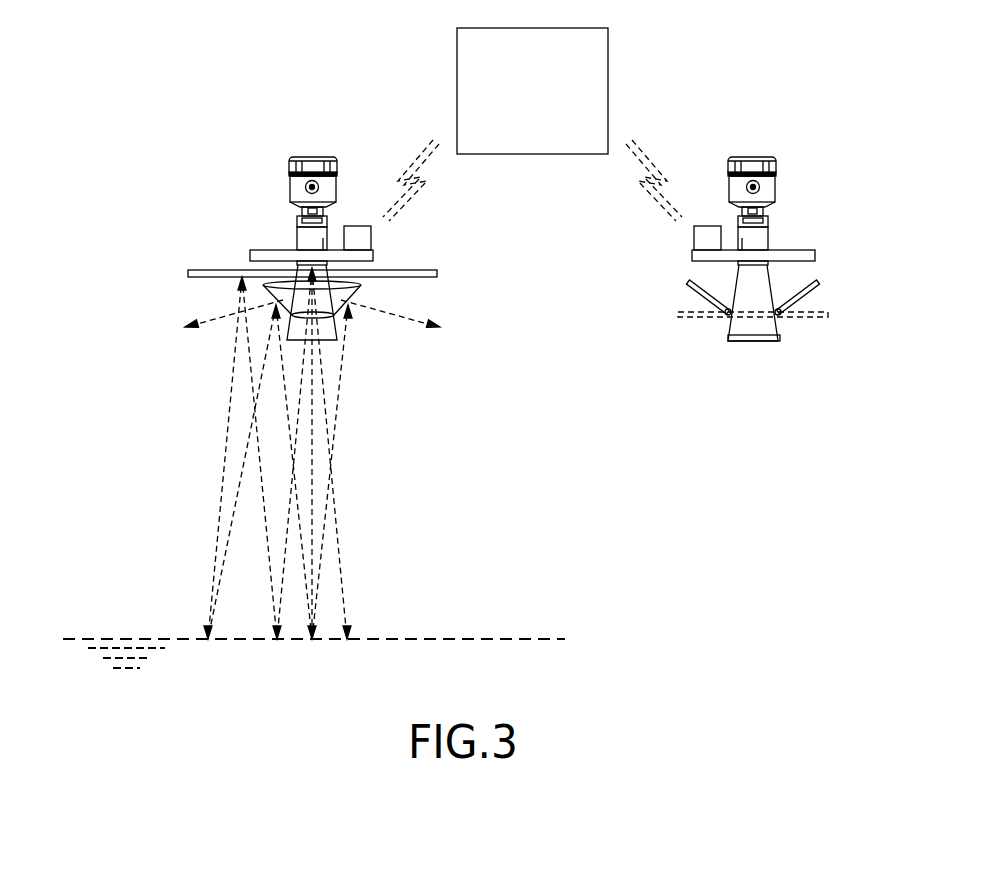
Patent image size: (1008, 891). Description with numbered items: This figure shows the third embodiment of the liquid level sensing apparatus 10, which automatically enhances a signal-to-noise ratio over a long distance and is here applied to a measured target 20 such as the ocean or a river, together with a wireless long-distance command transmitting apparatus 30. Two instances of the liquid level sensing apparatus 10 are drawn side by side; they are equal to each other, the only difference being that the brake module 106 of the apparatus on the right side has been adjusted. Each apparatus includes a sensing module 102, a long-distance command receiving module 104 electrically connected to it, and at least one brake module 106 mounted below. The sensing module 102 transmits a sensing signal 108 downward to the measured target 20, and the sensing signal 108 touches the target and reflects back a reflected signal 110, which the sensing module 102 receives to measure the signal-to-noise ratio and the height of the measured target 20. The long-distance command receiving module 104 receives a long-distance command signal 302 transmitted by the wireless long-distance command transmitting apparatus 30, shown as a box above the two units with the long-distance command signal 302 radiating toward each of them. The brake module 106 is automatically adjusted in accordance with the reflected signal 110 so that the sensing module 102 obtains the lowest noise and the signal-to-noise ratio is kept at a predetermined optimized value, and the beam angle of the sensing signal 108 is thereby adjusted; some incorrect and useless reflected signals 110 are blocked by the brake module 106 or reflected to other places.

The liquid level sensing apparatus 10 is at (532, 222).
The measured target 20 is at (133, 638).
The wireless long-distance command transmitting apparatus 30 is at (543, 34).
The sensing module 102 is at (290, 190).
The long-distance command receiving module 104 is at (366, 237).
The brake module 106 is at (355, 292).
The sensing signal 108 is at (312, 452).
The reflected signal 110 is at (265, 508).
The long-distance command signal 302 is at (420, 177).